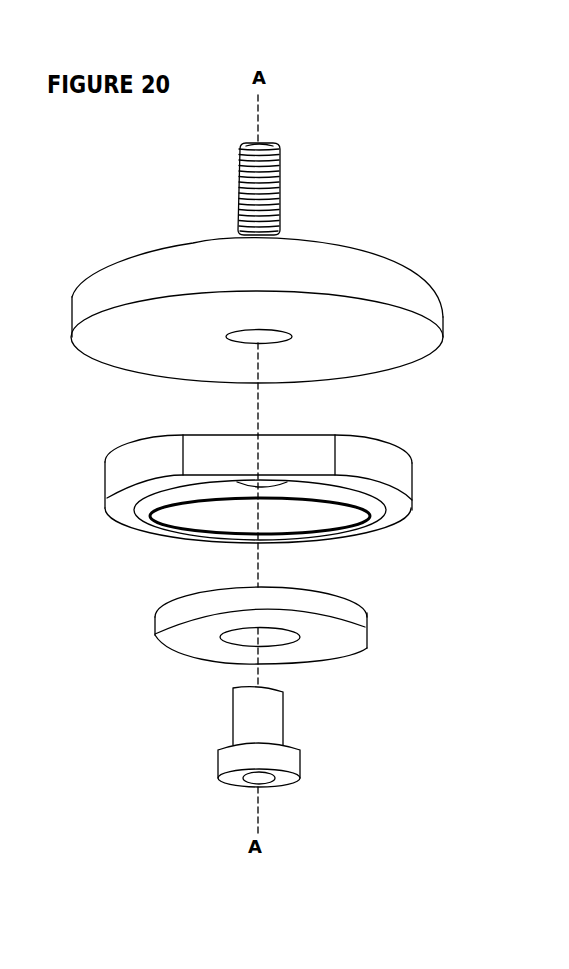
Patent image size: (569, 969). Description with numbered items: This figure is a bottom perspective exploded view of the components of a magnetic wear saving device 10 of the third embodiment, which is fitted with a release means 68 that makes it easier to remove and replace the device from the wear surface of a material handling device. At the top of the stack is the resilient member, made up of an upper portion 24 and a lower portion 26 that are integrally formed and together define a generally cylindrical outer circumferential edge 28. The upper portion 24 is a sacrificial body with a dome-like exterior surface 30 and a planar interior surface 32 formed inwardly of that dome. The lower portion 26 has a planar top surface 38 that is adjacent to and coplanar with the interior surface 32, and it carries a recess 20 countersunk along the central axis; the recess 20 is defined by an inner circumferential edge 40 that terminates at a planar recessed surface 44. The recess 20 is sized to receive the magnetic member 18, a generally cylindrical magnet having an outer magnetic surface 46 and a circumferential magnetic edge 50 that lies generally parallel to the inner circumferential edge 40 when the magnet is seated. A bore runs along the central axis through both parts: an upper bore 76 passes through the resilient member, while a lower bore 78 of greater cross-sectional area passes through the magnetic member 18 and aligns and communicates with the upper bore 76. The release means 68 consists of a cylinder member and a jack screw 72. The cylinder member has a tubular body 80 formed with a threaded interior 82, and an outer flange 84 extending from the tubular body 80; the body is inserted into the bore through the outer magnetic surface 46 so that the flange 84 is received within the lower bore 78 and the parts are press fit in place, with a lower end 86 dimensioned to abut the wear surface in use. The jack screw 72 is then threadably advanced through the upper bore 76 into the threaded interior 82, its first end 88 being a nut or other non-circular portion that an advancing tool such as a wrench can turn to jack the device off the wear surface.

The magnetic wear saving device 10 is at (425, 136).
The magnetic member 18 is at (259, 686).
The recess 20 is at (198, 509).
The upper portion 24 is at (258, 330).
The lower portion 26 is at (254, 517).
The outer circumferential edge 28 is at (443, 302).
The exterior surface 30 is at (383, 254).
The interior surface 32 is at (392, 343).
The top surface 38 is at (367, 442).
The inner circumferential edge 40 is at (338, 517).
The recessed surface 44 is at (293, 493).
The outer magnetic surface 46 is at (328, 643).
The circumferential magnetic edge 50 is at (353, 612).
The release means 68 is at (285, 193).
The jack screw 72 is at (258, 159).
The upper bore 76 is at (278, 336).
The lower bore 78 is at (282, 638).
The tubular body 80 is at (243, 720).
The threaded interior 82 is at (253, 783).
The outer flange 84 is at (296, 758).
The lower end 86 is at (287, 787).
The first end 88 is at (262, 143).